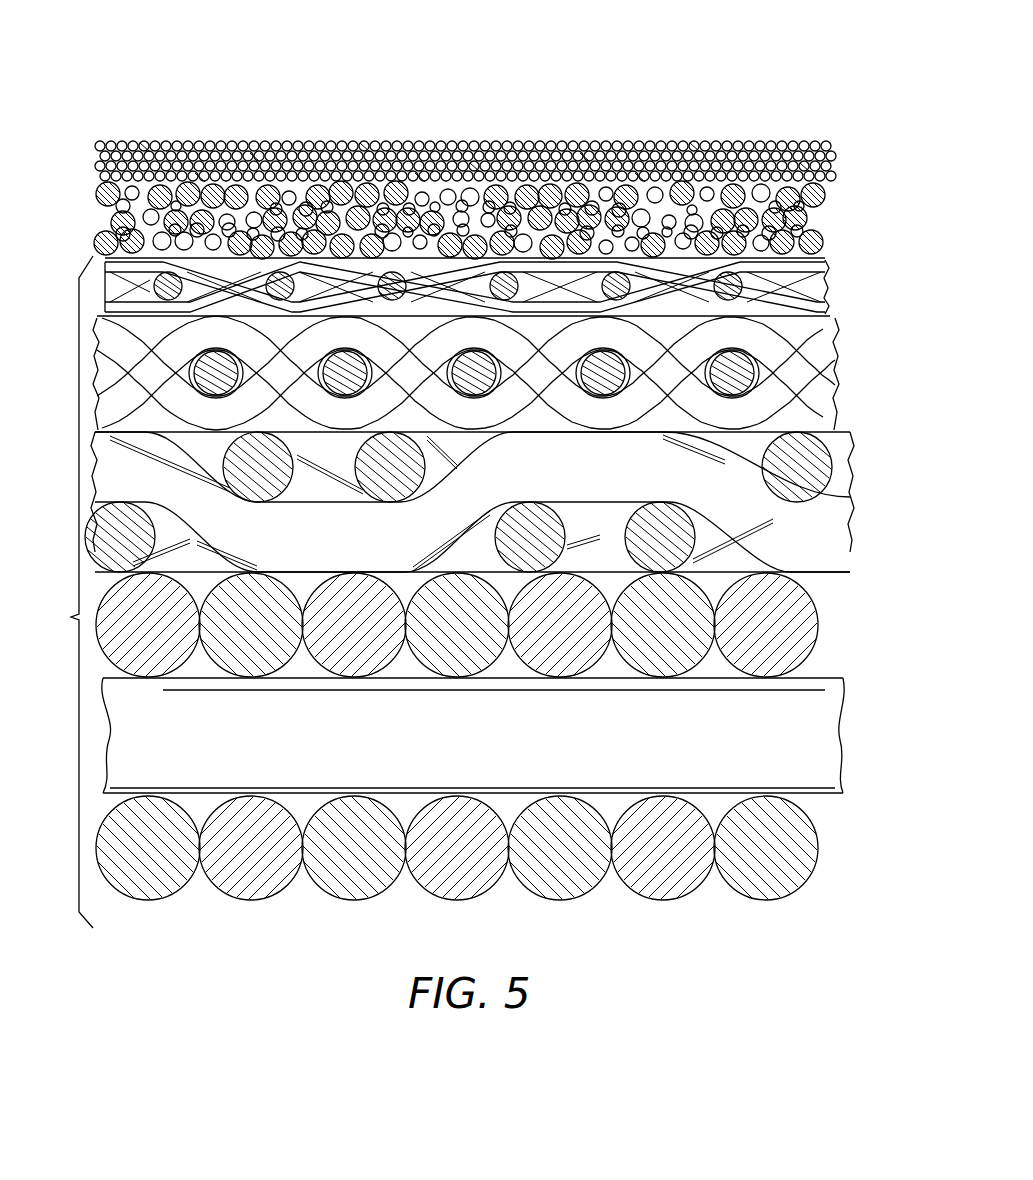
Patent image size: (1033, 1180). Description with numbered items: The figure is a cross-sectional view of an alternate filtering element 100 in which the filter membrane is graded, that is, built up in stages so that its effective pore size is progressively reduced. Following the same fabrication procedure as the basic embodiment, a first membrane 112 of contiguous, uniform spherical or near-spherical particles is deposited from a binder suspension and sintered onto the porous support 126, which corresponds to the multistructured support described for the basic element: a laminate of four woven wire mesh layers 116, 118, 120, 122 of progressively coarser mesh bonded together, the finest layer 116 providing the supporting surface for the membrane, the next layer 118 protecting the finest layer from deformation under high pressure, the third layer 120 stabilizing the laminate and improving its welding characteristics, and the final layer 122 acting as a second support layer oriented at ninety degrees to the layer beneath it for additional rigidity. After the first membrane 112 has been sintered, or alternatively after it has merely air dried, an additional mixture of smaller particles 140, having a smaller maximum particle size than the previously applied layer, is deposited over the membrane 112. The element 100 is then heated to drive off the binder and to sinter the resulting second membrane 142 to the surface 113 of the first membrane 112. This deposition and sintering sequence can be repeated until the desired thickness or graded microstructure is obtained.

The filter element 100 is at (298, 100).
The membrane 112 is at (830, 227).
The surface 113 is at (797, 192).
The fine woven mesh layer 116 is at (835, 292).
The woven mesh layer 118 is at (838, 350).
The coarse woven mesh layer 120 is at (836, 578).
The support plate 122 is at (836, 666).
The support structure 126 is at (71, 617).
The particles 140 is at (410, 140).
The membrane 142 is at (828, 134).